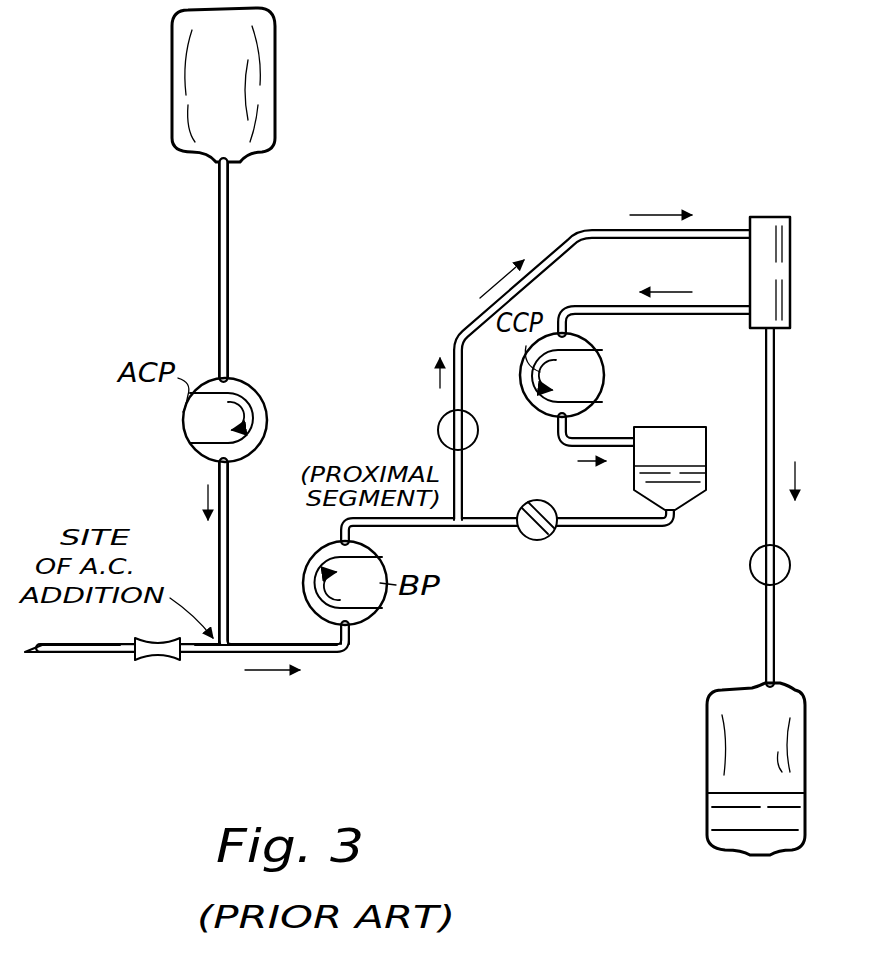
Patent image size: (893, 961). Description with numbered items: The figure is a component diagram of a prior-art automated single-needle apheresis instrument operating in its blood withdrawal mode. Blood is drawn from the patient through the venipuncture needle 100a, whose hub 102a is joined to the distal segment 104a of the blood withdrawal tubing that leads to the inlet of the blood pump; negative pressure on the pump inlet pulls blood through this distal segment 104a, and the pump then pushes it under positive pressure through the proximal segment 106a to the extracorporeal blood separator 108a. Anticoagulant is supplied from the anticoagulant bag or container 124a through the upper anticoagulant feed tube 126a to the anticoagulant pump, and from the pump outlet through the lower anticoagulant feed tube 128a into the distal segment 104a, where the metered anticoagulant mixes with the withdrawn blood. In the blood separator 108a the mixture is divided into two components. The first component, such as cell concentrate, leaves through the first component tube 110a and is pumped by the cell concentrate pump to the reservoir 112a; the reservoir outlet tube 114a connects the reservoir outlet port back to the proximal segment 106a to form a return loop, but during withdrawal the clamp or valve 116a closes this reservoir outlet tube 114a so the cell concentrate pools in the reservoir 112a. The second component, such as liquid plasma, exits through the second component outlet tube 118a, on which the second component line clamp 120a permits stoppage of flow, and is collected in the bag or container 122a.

The venipuncture needle 100a is at (97, 660).
The hub of the venipuncture needle 102a is at (160, 662).
The distal segment 104a is at (340, 665).
The proximal segment 106a is at (455, 340).
The extracorporeal blood separator 108a is at (790, 270).
The first component tube 110a is at (640, 315).
The reservoir 112a is at (655, 428).
The reservoir outlet tube 114a is at (500, 518).
The clamp or valve 116a is at (556, 508).
The second component outlet tube 118a is at (775, 408).
The second component line clamp 120a is at (790, 566).
The bag or container 122a is at (708, 740).
The anticoagulant bag or container 124a is at (172, 86).
The upper anticoagulant feed tube 126a is at (219, 242).
The lower anticoagulant feed tube 128a is at (222, 470).